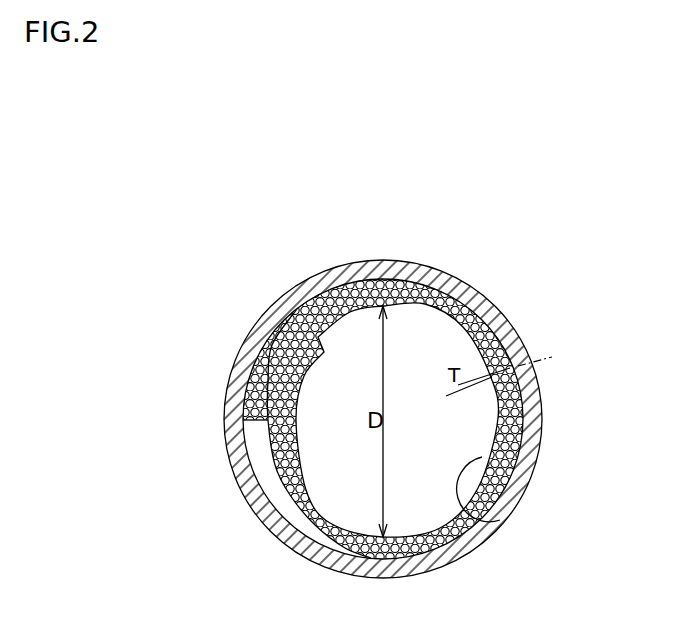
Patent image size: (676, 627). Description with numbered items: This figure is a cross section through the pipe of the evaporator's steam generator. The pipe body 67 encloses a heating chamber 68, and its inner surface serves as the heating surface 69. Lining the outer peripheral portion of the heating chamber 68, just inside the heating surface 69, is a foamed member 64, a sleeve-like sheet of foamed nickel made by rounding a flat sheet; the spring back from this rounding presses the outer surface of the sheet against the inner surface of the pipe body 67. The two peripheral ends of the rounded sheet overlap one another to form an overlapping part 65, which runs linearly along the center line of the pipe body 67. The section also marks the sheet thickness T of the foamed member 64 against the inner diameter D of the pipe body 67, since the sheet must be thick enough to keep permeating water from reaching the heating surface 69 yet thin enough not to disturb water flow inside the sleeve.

The foamed member 64 is at (324, 290).
The overlapping part 65 is at (252, 333).
The pipe body 67 is at (481, 293).
The heating chamber 68 is at (428, 433).
The heating surface 69 is at (502, 522).